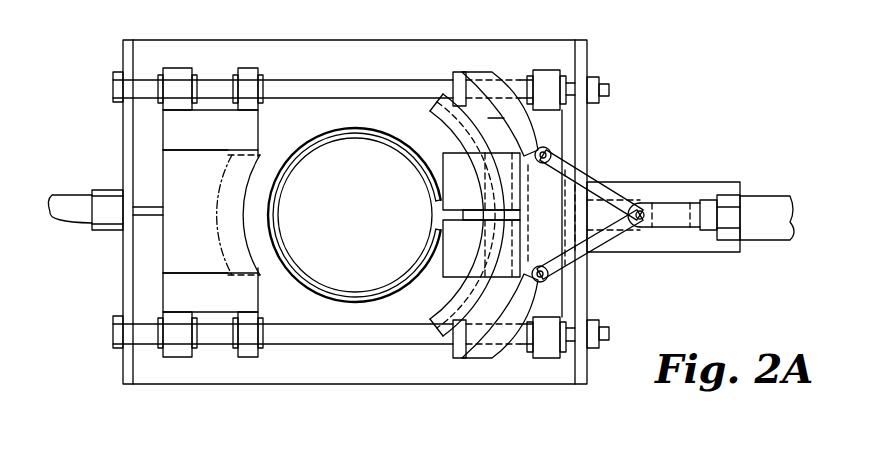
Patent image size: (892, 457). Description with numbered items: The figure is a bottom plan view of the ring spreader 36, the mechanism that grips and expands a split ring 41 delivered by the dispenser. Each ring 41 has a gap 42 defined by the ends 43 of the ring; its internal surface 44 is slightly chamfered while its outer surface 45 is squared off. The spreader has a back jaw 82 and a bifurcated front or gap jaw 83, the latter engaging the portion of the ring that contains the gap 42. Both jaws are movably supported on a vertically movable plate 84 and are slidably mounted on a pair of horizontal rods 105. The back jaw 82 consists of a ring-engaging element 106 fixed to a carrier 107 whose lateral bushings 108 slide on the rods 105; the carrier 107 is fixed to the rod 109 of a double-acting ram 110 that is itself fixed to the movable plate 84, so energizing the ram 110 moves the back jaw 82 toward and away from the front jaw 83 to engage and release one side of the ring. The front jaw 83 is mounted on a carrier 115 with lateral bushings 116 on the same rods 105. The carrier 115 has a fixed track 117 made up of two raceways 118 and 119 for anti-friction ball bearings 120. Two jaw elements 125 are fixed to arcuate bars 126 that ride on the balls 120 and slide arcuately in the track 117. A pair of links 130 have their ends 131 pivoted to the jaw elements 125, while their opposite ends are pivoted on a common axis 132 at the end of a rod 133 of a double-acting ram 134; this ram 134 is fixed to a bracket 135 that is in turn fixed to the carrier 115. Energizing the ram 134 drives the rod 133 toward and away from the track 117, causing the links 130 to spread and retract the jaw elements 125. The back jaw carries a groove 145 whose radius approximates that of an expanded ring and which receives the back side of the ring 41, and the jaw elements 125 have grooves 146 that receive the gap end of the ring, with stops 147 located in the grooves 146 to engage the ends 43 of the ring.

The ring spreader 36 is at (52, 356).
The ring 41 is at (334, 300).
The gap 42 is at (436, 230).
The ends of the ring 43 is at (440, 224).
The internal surface of the ring 44 is at (422, 170).
The outer surface of the ring 45 is at (388, 122).
The back jaw 82 is at (170, 258).
The front or gap jaw 83 is at (430, 290).
The movable plate 84 is at (590, 40).
The horizontal rods 105 is at (378, 82).
The ring-engaging element 106 is at (205, 278).
The carrier 107 is at (210, 130).
The lateral bushings 108 is at (207, 78).
The rod 109 is at (160, 208).
The double-acting ram 110 is at (70, 226).
The carrier 115 is at (548, 70).
The lateral bushings 116 is at (578, 80).
The track 117 is at (482, 100).
The raceway 118 is at (452, 90).
The raceway 119 is at (478, 118).
The anti-friction ball bearings 120 is at (497, 215).
The jaw elements 125 is at (518, 152).
The arcuate bars 126 is at (470, 135).
The links 130 is at (625, 240).
The ends of the links 131 is at (556, 152).
The axis 132 is at (645, 210).
The rod 133 is at (704, 240).
The double-acting ram 134 is at (778, 242).
The bracket 135 is at (728, 185).
The groove 145 is at (268, 282).
The grooves 146 is at (463, 148).
The stops 147 is at (480, 262).